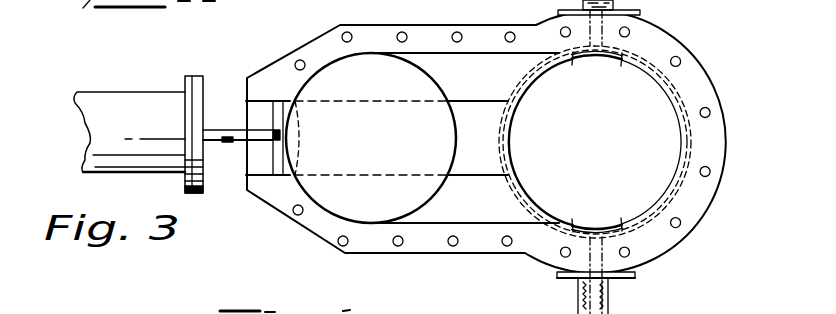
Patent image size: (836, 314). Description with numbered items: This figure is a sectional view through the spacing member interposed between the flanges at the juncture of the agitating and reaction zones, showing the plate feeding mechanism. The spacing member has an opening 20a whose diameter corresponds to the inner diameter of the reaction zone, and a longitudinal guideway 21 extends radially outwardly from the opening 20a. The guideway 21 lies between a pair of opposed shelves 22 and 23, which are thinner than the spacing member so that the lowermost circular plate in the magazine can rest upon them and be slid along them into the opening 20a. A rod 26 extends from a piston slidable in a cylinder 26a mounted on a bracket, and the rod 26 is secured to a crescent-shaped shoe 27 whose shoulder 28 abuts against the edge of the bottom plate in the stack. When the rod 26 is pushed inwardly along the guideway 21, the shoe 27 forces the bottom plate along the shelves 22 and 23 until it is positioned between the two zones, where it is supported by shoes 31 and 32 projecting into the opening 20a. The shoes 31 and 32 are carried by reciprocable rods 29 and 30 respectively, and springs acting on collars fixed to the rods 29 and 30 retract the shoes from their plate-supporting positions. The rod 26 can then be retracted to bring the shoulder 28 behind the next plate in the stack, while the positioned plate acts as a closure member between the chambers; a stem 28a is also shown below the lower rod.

The opening 20a is at (662, 152).
The longitudinal guideway 21 is at (400, 101).
The shelf 22 is at (507, 80).
The shelf 23 is at (503, 193).
The rod 26 is at (223, 142).
The cylinder 26a is at (143, 101).
The crescent-shaped shoe 27 is at (277, 113).
The shoulder 28 is at (287, 120).
The valve stem 28a is at (607, 295).
The reciprocable rod 29 is at (640, 267).
The reciprocable rod 30 is at (640, 13).
The shoe 31 is at (574, 224).
The shoe 32 is at (578, 62).